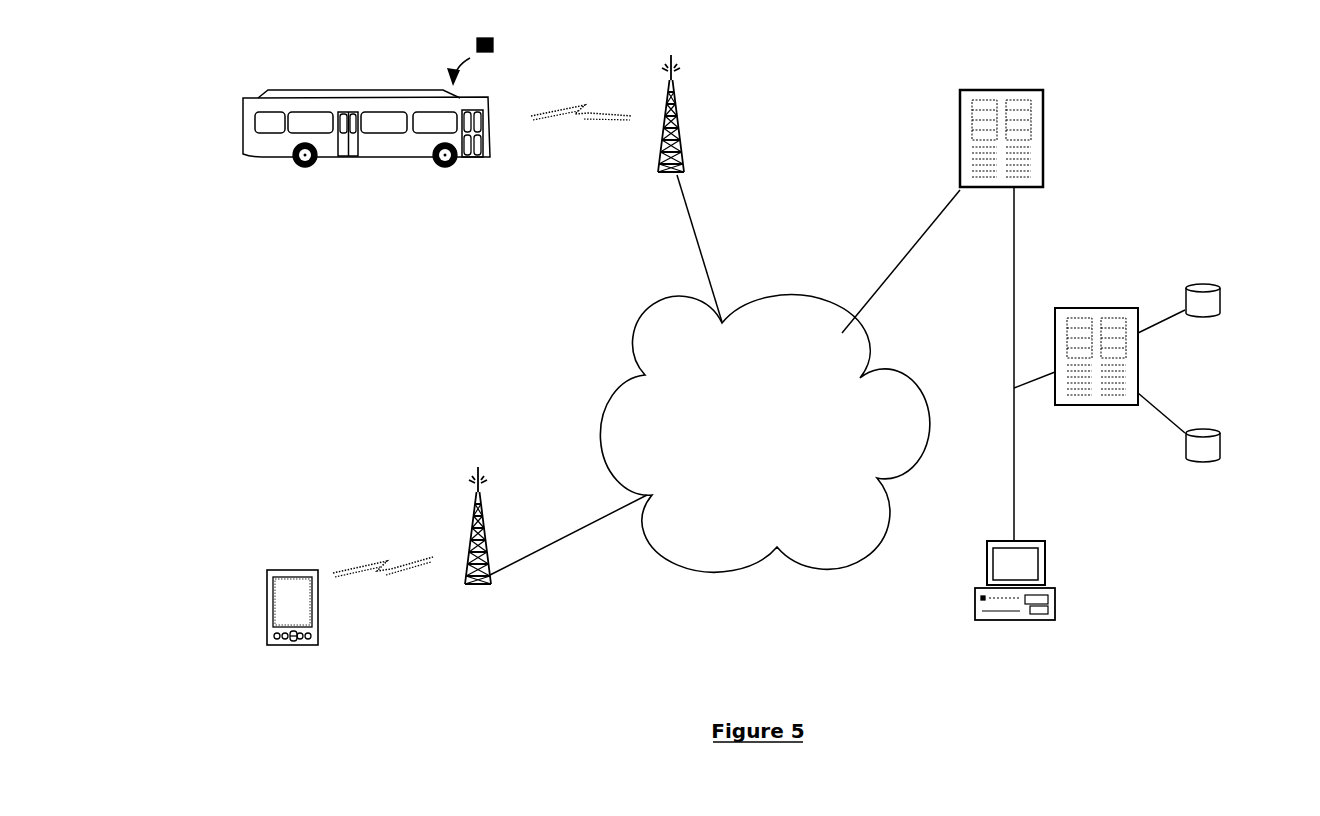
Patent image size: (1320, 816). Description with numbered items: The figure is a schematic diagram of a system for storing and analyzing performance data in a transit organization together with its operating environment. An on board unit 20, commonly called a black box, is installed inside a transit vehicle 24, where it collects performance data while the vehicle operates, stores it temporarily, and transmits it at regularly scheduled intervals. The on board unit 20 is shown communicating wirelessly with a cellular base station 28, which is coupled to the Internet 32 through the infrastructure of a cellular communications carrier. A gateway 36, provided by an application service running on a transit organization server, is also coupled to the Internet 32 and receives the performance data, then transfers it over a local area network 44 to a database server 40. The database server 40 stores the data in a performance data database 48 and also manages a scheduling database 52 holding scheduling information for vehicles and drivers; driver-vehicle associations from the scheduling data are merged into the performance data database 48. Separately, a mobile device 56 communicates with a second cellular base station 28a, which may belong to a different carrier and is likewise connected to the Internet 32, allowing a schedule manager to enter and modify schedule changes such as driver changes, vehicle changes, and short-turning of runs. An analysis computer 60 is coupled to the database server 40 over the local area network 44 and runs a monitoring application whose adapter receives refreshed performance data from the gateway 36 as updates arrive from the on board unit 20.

The on board unit 20 is at (493, 40).
The transit vehicle 24 is at (291, 88).
The cellular base station 28 is at (676, 97).
The cellular base station 28a is at (475, 508).
The Internet 32 is at (748, 458).
The gateway 36 is at (1029, 90).
The database server 40 is at (1112, 308).
The local area network 44 is at (1013, 365).
The performance data database 48 is at (1208, 284).
The scheduling database 52 is at (1208, 430).
The mobile device 56 is at (268, 592).
The analysis computer 60 is at (1055, 590).